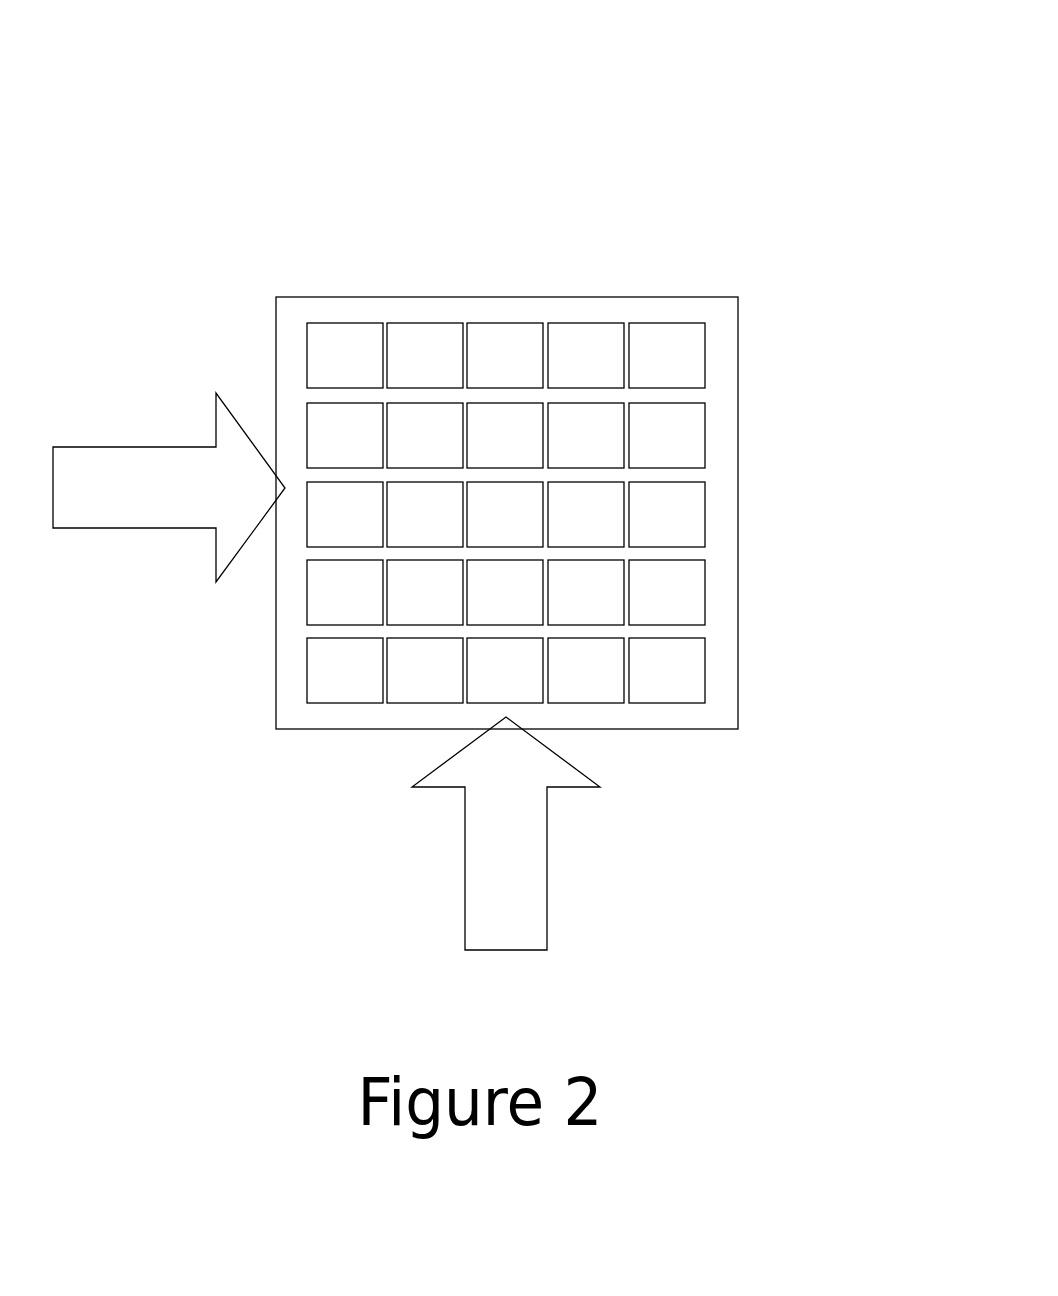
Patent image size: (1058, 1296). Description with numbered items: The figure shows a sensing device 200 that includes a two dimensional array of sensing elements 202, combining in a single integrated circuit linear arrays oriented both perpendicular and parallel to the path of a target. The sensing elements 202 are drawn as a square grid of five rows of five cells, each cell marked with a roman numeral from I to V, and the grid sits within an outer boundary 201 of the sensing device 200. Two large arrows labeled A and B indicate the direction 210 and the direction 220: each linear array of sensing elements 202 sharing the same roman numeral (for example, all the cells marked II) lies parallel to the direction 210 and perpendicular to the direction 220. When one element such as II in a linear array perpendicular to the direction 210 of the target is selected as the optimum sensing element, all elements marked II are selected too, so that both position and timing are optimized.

The sensing device 200 is at (365, 178).
The substrate / array housing 201 is at (585, 284).
The sensing elements 202 is at (724, 702).
The direction 210 is at (222, 448).
The direction 220 is at (546, 893).